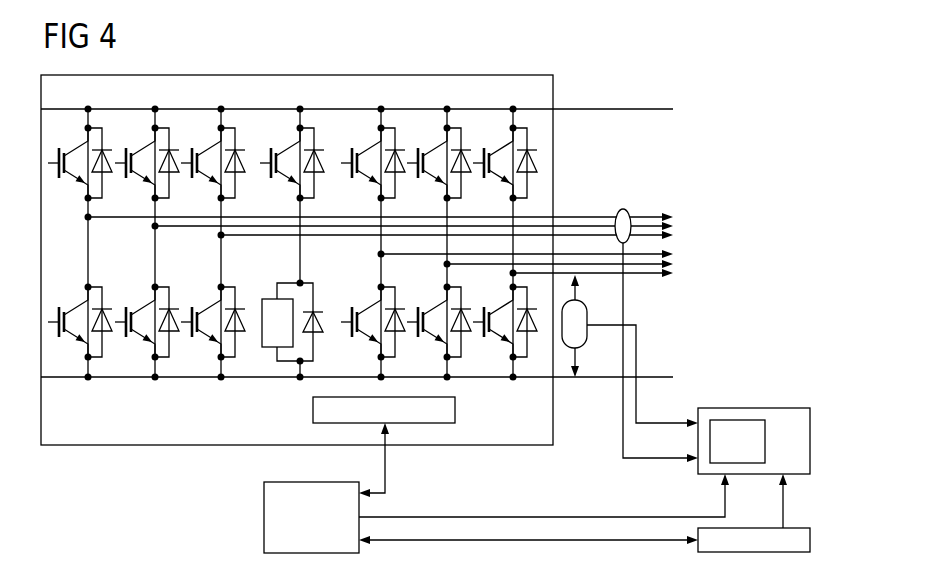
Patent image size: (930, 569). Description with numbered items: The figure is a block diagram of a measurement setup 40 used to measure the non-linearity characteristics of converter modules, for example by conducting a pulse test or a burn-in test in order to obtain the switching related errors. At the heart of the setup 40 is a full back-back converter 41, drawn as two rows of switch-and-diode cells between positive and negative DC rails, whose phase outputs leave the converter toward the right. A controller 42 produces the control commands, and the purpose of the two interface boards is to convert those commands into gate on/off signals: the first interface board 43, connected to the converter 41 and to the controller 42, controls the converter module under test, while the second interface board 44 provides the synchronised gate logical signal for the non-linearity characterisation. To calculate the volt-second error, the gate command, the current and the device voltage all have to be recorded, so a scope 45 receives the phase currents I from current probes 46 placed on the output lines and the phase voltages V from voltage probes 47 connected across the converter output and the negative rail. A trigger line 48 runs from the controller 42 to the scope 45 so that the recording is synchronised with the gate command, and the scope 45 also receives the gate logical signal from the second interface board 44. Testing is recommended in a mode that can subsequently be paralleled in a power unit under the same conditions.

The measurement setup 40 is at (722, 113).
The full back-back converter 41 is at (553, 157).
The controller 42 is at (264, 515).
The first interface board 43 is at (313, 410).
The second interface board 44 is at (752, 528).
The scope 45 is at (752, 408).
The current probes 46 is at (623, 208).
The voltage probes 47 is at (586, 346).
The trigger line 48 is at (540, 516).